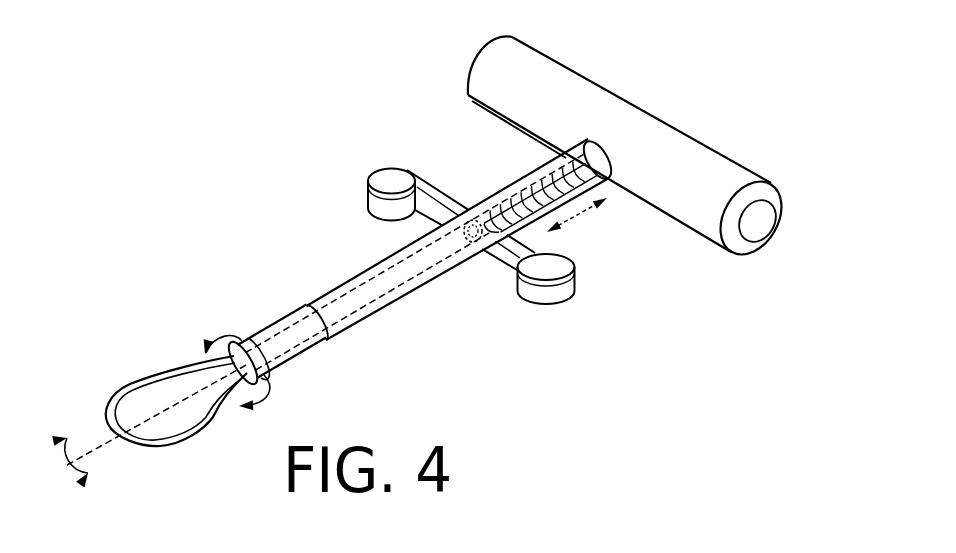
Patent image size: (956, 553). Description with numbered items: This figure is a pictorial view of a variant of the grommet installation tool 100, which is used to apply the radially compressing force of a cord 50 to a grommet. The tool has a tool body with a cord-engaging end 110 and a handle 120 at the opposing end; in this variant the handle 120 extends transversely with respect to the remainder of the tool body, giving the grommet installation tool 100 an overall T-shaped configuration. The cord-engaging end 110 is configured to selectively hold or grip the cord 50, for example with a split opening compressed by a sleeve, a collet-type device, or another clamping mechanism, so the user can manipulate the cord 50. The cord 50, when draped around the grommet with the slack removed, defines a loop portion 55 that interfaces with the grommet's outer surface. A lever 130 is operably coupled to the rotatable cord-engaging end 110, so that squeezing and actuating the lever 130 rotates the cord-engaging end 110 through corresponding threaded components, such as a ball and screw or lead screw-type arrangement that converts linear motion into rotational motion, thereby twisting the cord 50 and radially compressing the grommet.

The grommet installation tool 100 is at (295, 178).
The cord 50 is at (163, 322).
The loop portion 55 is at (107, 418).
The cord-engaging end 110 is at (295, 355).
The handle 120 is at (577, 111).
The lever 130 is at (391, 177).